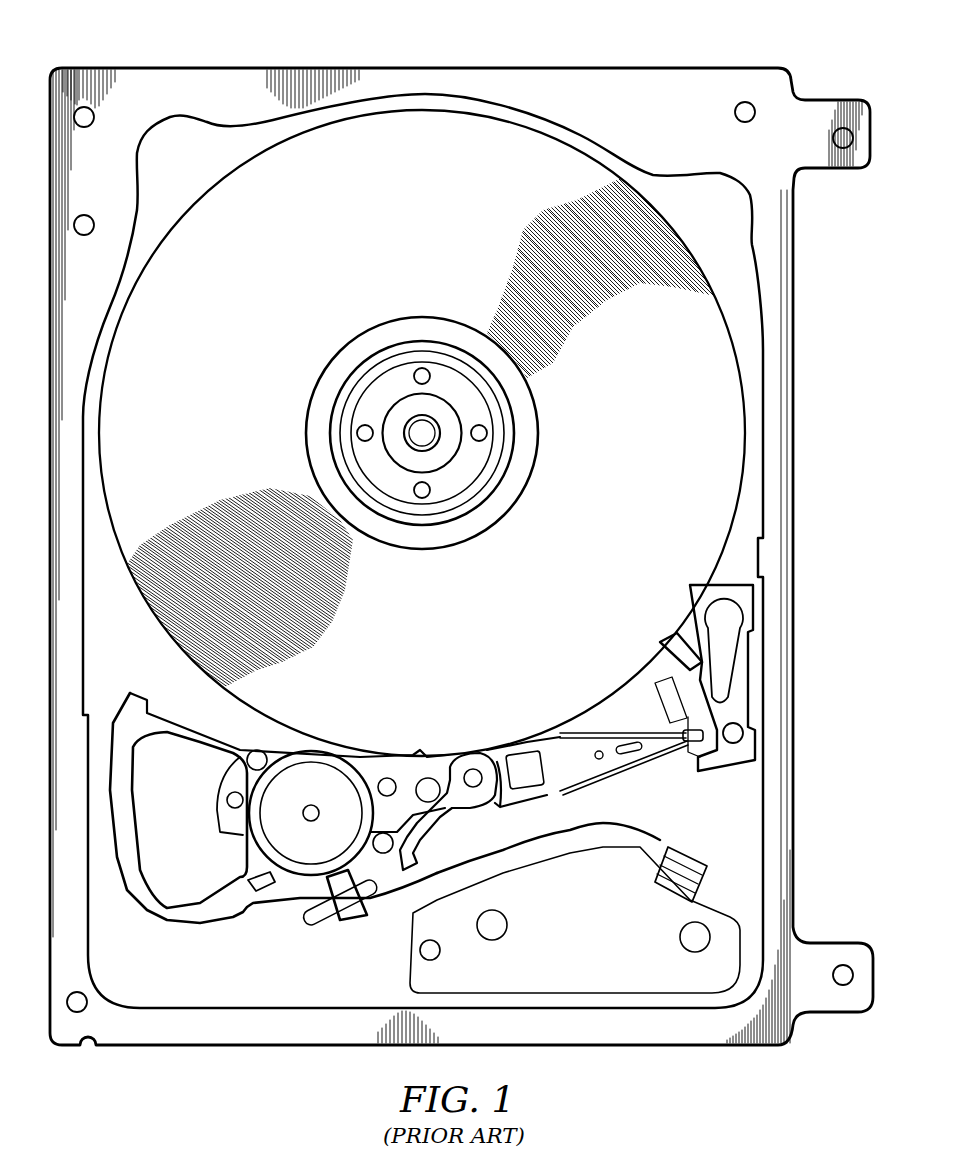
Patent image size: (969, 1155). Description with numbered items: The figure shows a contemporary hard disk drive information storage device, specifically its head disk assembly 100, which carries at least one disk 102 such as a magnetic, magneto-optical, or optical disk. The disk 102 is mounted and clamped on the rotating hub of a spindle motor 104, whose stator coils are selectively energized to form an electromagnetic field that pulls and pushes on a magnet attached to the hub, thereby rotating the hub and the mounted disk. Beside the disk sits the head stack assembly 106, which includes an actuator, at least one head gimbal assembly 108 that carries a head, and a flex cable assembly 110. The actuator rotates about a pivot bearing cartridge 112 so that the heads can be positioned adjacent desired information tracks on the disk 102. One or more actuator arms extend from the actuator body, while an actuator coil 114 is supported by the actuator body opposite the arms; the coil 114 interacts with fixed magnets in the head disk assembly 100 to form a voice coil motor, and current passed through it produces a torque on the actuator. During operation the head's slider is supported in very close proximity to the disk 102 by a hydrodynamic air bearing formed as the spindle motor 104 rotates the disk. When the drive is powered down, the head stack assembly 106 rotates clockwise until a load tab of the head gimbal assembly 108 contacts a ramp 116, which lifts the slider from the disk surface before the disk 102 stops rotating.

The head disk assembly 100 is at (578, 60).
The disk 102 is at (443, 232).
The spindle motor 104 is at (390, 392).
The head stack assembly 106 is at (448, 762).
The head gimbal assembly 108 is at (627, 733).
The flex cable assembly 110 is at (657, 830).
The pivot bearing cartridge 112 is at (297, 842).
The actuator coil 114 is at (177, 923).
The ramp 116 is at (672, 633).